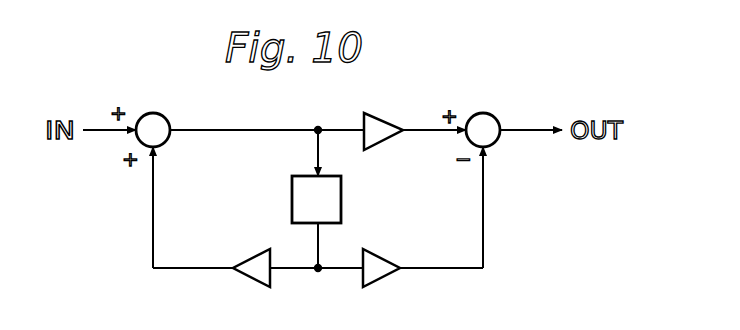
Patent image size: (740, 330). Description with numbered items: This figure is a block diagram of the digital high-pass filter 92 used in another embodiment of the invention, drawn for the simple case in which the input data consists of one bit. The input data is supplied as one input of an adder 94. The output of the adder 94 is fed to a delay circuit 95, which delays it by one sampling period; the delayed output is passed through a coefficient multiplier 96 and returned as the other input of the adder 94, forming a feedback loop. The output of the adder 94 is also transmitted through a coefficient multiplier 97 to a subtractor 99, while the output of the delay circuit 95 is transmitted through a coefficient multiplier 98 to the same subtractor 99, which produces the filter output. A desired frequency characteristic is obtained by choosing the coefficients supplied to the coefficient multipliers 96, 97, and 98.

The digital high-pass filter 92 is at (242, 115).
The adder 94 is at (173, 140).
The delay circuit 95 is at (341, 203).
The coefficient multiplier 96 is at (248, 280).
The coefficient multiplier 97 is at (385, 141).
The coefficient multiplier 98 is at (388, 277).
The subtractor 99 is at (500, 138).